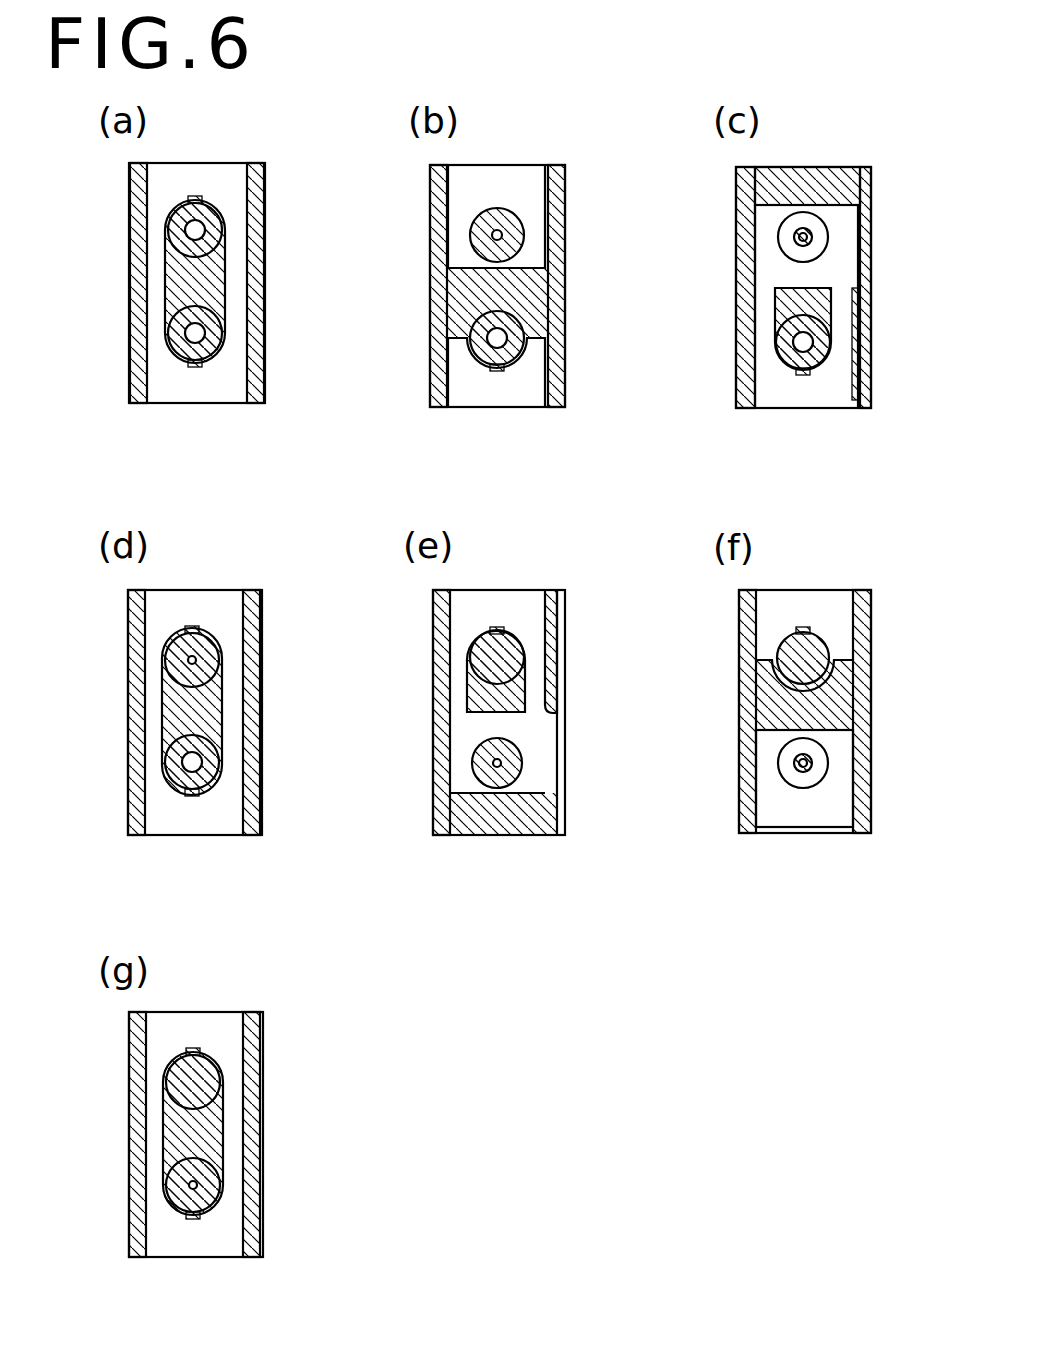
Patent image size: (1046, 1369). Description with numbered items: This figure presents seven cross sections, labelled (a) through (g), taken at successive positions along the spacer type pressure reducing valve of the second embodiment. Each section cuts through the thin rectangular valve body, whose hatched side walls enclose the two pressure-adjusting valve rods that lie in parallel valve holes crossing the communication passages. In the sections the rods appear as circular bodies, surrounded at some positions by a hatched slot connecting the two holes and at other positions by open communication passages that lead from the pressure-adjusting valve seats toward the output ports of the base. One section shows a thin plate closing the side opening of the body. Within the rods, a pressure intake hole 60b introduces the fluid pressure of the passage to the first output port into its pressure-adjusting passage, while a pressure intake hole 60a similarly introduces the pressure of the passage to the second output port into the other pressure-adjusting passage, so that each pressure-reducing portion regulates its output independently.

The pressure intake hole 60a is at (820, 825).
The pressure intake hole 60b is at (742, 267).